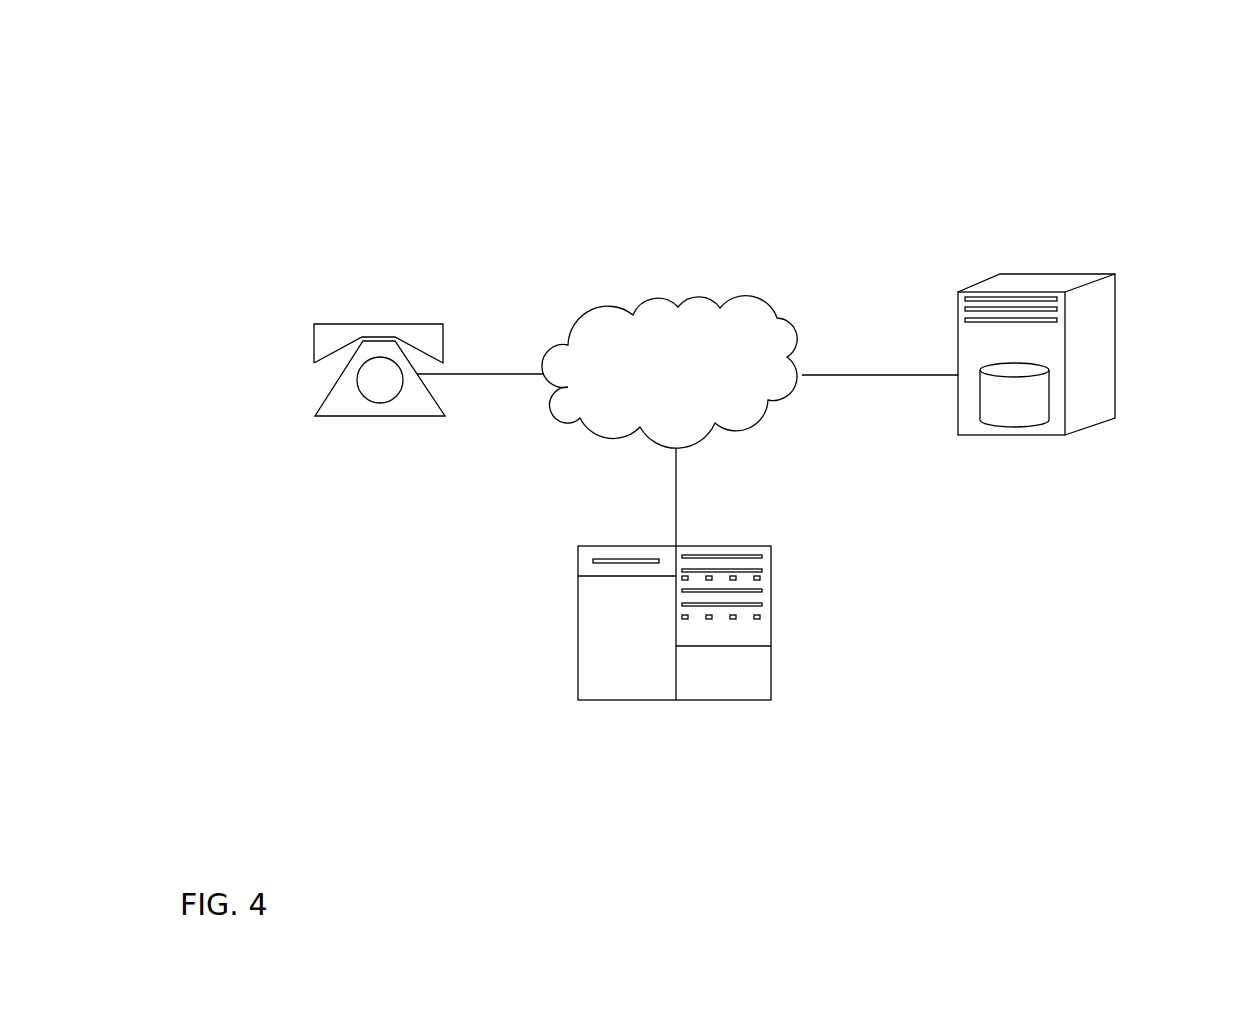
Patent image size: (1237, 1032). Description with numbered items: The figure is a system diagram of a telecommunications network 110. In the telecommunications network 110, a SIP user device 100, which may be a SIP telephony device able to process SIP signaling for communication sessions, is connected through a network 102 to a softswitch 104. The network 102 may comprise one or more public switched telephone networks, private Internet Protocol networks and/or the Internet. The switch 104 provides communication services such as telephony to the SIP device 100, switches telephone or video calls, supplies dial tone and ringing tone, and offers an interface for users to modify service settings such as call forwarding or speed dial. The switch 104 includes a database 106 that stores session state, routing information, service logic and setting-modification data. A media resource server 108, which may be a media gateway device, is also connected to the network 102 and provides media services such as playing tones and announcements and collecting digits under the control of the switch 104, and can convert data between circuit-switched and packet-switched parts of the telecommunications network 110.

The SIP user device 100 is at (314, 352).
The network 102 is at (750, 375).
The softswitch 104 is at (1092, 354).
The database 106 is at (1014, 395).
The media resource server 108 is at (768, 627).
The telecommunications network 110 is at (105, 48).